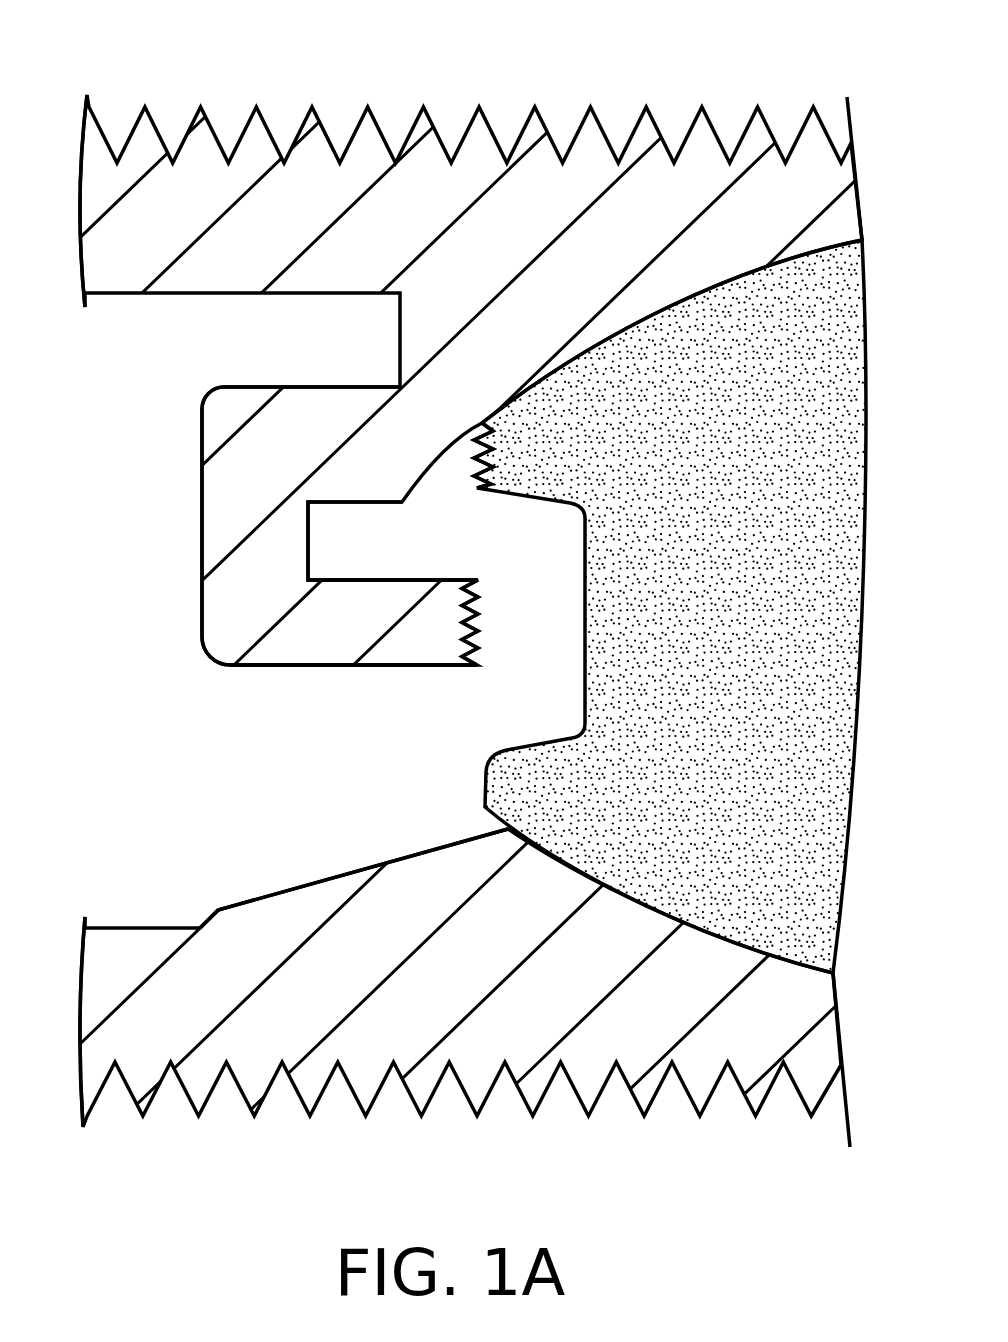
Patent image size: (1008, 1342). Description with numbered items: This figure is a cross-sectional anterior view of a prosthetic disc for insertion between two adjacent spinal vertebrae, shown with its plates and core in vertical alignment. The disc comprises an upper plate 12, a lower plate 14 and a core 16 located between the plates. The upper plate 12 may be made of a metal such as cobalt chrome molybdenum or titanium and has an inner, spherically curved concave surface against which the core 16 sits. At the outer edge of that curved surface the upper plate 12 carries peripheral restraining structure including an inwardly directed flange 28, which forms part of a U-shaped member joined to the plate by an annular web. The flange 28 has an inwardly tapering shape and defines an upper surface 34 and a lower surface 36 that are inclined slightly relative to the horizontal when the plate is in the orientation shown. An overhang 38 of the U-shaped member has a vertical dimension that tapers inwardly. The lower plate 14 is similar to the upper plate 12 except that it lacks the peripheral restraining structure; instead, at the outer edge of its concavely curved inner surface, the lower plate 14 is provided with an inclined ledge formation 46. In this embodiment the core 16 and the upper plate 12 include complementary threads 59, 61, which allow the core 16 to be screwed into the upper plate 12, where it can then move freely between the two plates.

The upper plate 12 is at (490, 177).
The lower plate 14 is at (708, 1035).
The core 16 is at (604, 714).
The flange 28 is at (315, 648).
The upper surface of flange 34 is at (435, 582).
The lower surface of flange 36 is at (423, 667).
The overhang 38 is at (335, 533).
The inclined ledge formation 46 is at (382, 862).
The thread 59 is at (492, 450).
The thread 61 is at (482, 620).